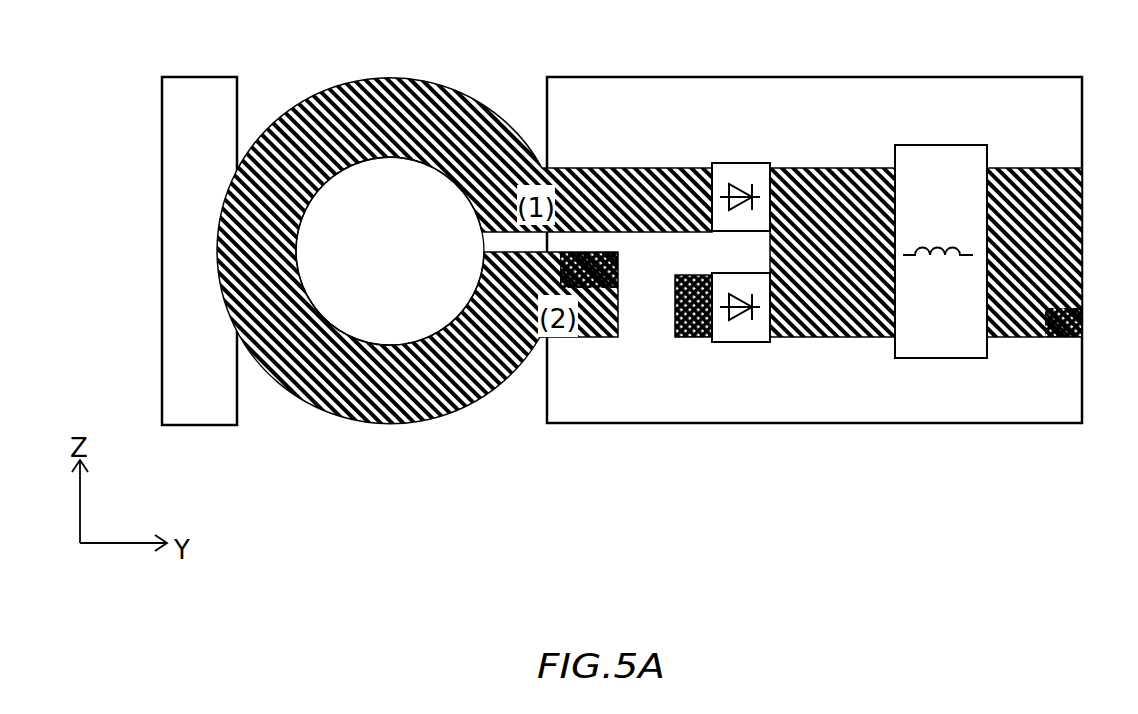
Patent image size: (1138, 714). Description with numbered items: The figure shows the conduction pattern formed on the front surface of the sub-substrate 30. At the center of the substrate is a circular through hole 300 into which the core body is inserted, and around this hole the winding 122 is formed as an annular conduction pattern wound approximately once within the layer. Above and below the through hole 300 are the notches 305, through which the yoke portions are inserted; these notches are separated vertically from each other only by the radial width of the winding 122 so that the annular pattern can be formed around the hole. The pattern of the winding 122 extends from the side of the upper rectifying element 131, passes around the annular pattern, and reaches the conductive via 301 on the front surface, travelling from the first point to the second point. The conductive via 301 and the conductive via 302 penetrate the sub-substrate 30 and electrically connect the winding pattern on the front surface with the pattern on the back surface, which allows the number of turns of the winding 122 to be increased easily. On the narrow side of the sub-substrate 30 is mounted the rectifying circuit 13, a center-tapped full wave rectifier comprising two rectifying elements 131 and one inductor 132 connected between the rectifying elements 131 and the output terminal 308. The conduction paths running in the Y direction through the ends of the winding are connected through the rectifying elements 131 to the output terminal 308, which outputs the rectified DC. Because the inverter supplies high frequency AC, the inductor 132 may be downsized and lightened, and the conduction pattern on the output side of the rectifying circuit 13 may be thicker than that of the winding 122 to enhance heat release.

The sub-substrate 30 is at (889, 42).
The rectifying circuit 13 is at (903, 245).
The rectifying element 131 is at (763, 233).
The inductor 132 is at (896, 358).
The winding 122 is at (235, 460).
The through hole 300 is at (297, 253).
The conductive via 301 is at (618, 253).
The conductive via 302 is at (672, 278).
The notch 305 is at (236, 122).
The output terminal 308 is at (1082, 307).